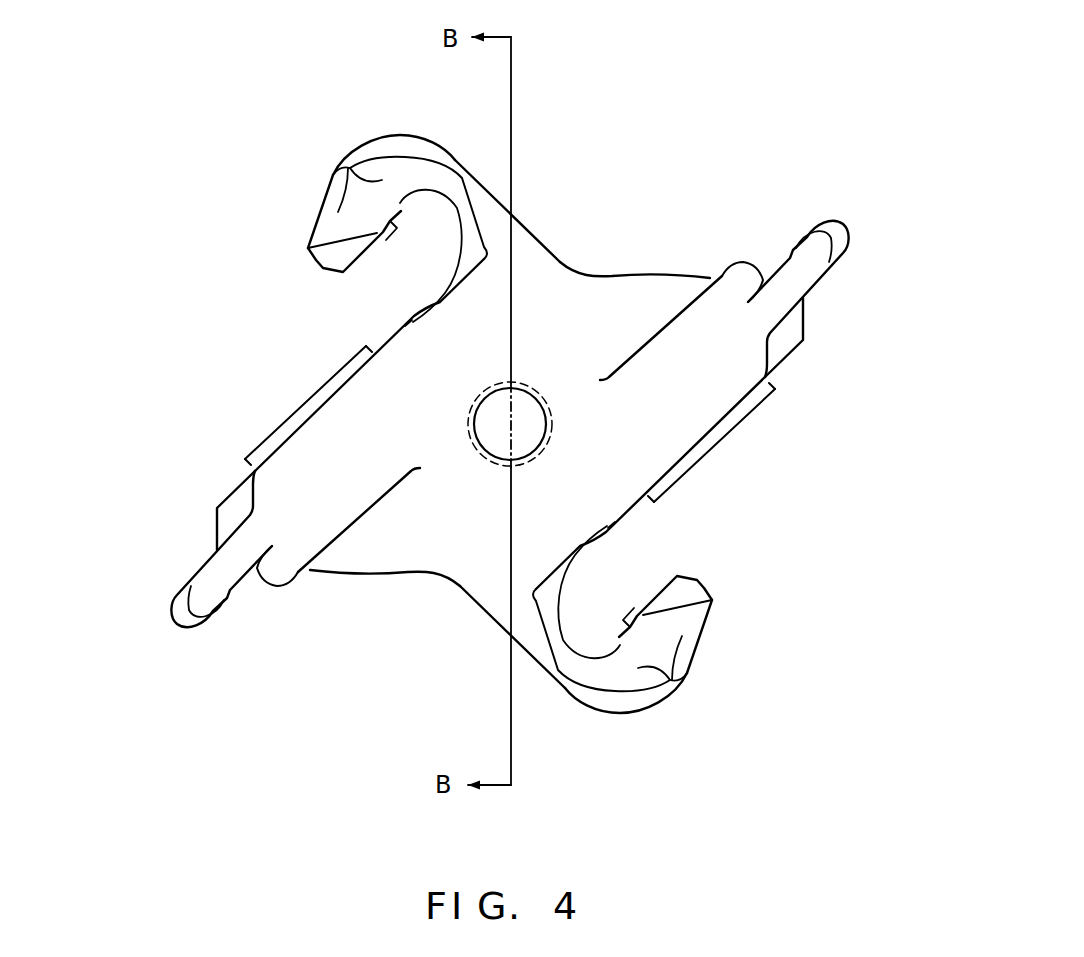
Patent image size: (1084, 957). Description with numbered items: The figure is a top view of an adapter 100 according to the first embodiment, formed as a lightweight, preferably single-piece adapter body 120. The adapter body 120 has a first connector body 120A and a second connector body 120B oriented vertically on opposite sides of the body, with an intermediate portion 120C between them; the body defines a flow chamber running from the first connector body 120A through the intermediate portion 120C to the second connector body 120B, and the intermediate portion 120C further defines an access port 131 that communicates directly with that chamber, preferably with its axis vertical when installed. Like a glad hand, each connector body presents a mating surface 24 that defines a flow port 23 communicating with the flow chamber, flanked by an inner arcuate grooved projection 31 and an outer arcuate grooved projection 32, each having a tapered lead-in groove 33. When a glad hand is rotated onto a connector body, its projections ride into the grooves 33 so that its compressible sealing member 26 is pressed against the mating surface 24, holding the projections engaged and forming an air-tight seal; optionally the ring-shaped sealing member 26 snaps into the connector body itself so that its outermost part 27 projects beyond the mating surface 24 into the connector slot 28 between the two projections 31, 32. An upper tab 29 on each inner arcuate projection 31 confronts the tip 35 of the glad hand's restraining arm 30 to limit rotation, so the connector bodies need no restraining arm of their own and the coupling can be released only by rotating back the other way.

The adapter 100 is at (305, 682).
The adapter body 120 is at (618, 274).
The first connector body 120A is at (191, 475).
The second connector body 120B is at (803, 420).
The intermediate portion 120C is at (450, 608).
The access port 131 is at (522, 397).
The flow port 23 is at (300, 394).
The mating surface 24 is at (245, 474).
The sealing member 26 is at (346, 368).
The outermost part 27 is at (279, 432).
The connector slot 28 is at (380, 292).
The upper tab 29 is at (342, 270).
The restraining arm 30 is at (325, 558).
The inner arcuate grooved projection 31 is at (335, 201).
The outer arcuate grooved projection 32 is at (190, 619).
The tapered lead-in groove 33 is at (390, 230).
The tip 35 is at (289, 584).